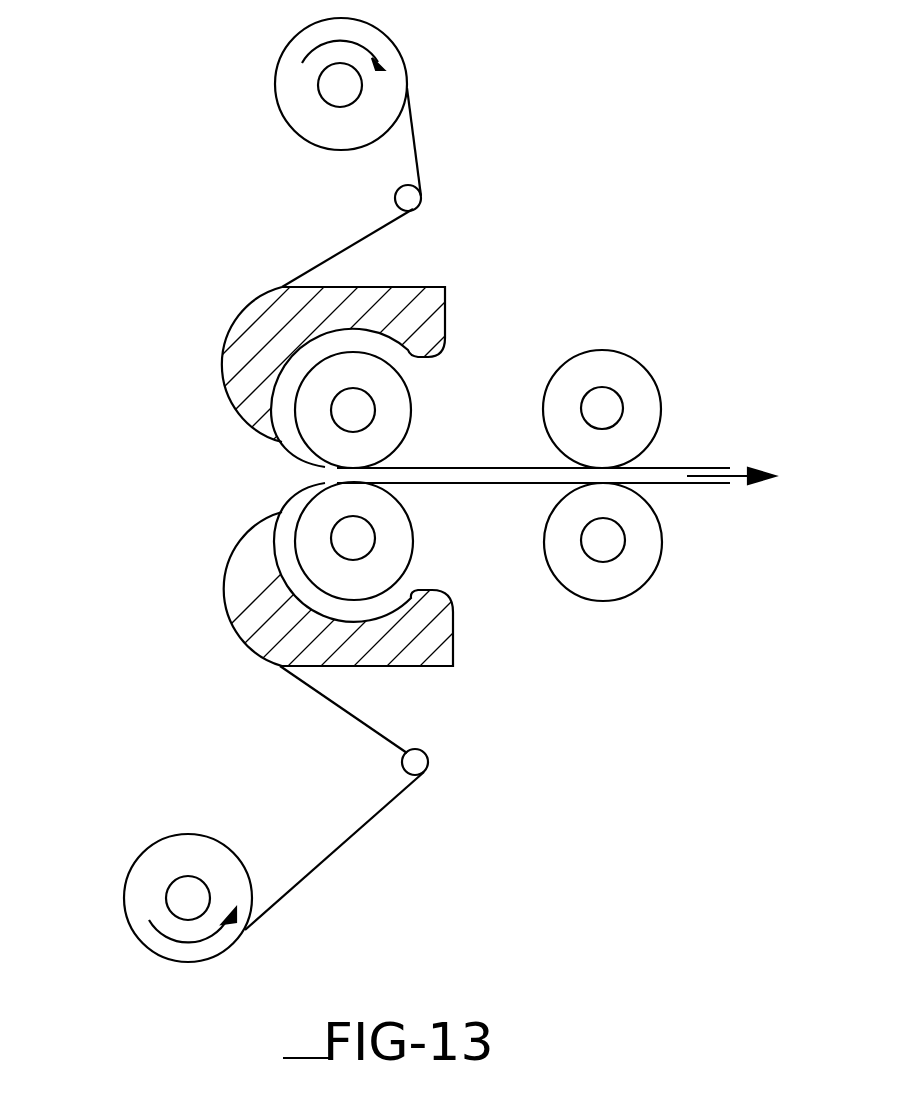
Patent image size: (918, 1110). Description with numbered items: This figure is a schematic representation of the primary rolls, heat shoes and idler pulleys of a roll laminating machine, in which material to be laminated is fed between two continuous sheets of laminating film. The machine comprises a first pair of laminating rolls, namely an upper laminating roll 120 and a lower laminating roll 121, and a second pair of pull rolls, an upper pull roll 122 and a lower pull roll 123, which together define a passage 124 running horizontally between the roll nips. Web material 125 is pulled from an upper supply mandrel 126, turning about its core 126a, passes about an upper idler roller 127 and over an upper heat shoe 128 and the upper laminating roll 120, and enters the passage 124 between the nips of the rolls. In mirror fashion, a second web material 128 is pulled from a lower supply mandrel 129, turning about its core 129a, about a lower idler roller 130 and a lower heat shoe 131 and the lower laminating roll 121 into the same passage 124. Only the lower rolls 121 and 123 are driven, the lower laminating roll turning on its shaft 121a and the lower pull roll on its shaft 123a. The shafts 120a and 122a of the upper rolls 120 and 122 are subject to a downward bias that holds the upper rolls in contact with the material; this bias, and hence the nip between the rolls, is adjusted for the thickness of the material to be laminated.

The upper laminating roll 120 is at (415, 403).
The shaft of upper laminating roll 120a is at (363, 405).
The lower laminating roll 121 is at (412, 560).
The shaft of lower laminating roll 121a is at (372, 537).
The upper pull roll 122 is at (653, 422).
The shaft of upper pull roll 122a is at (602, 408).
The lower pull roll 123 is at (648, 578).
The shaft of lower pull roll 123a is at (613, 538).
The passage 124 is at (420, 478).
The web material 125 is at (416, 148).
The upper supply mandrel 126 is at (282, 111).
The core of upper supply mandrel 126a is at (334, 87).
The upper idler roller 127 is at (397, 198).
The upper heat shoe 128 is at (420, 287).
The lower supply mandrel 129 is at (128, 893).
The core of lower supply mandrel 129a is at (189, 887).
The lower idler roller 130 is at (426, 766).
The lower heat shoe 131 is at (412, 657).